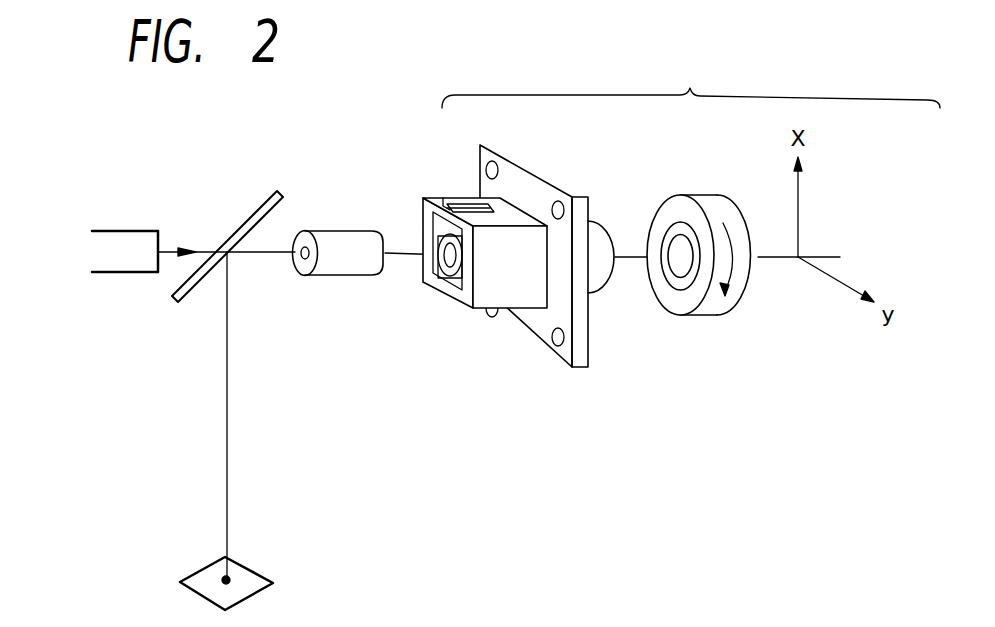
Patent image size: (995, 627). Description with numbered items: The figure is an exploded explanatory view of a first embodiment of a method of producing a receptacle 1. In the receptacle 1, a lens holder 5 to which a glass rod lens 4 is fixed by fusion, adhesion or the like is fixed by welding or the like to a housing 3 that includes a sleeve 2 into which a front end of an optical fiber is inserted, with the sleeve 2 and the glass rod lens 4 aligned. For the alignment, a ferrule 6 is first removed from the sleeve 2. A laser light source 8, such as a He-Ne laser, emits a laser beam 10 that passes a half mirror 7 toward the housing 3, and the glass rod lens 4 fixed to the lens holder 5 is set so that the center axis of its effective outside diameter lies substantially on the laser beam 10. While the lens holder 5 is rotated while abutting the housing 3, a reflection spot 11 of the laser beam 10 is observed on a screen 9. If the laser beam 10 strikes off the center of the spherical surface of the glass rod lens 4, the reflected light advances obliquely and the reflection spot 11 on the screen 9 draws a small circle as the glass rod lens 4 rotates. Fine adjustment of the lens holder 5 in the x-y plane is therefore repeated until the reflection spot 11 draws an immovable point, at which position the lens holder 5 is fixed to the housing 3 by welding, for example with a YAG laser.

The receptacle 1 is at (691, 81).
The sleeve 2 is at (453, 277).
The housing 3 is at (553, 176).
The glass rod lens 4 is at (678, 237).
The lens holder 5 is at (716, 196).
The ferrule 6 is at (366, 231).
The half mirror 7 is at (278, 190).
The laser light source 8 is at (148, 231).
The screen 9 is at (252, 580).
The laser beam 10 is at (206, 243).
The reflection spot 11 is at (222, 577).